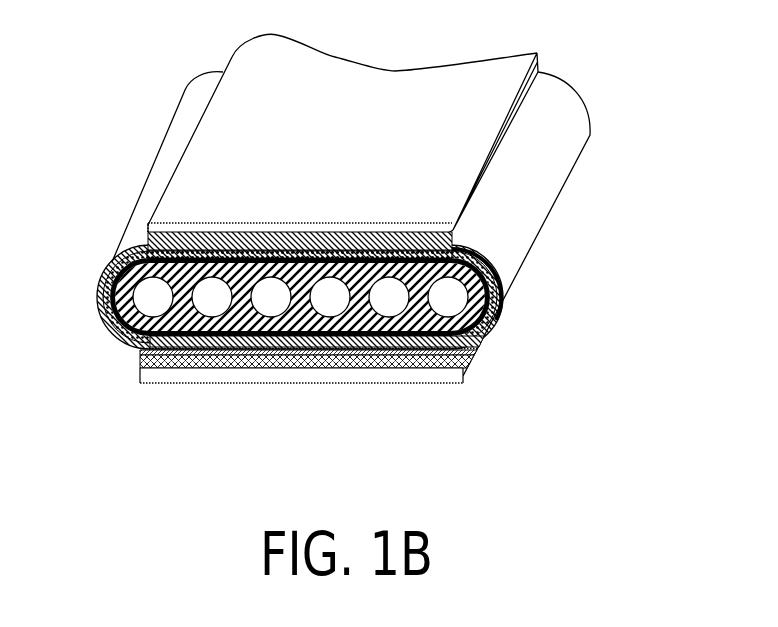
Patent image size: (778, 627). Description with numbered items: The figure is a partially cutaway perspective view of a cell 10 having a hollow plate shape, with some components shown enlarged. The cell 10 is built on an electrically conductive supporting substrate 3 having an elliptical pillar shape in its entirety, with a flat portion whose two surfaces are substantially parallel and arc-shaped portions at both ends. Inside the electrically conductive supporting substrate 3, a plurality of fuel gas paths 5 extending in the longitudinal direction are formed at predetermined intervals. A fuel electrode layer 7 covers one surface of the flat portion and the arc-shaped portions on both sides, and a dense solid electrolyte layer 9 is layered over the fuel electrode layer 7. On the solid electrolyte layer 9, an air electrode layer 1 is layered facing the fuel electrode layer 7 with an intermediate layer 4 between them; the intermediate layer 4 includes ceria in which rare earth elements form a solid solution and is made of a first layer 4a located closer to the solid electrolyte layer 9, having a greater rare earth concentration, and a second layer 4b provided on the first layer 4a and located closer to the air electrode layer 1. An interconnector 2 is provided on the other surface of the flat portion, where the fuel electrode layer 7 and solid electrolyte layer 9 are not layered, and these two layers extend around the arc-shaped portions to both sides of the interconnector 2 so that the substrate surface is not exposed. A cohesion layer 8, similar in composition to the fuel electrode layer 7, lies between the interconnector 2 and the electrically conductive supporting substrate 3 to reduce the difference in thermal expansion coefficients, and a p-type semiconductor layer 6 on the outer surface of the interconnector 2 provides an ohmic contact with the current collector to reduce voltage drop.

The air electrode layer 1 is at (205, 372).
The interconnector 2 is at (160, 243).
The electrically conductive supporting substrate 3 is at (492, 332).
The intermediate layer 4 is at (307, 422).
The first layer 4a is at (347, 357).
The second layer 4b is at (345, 427).
The fuel gas paths 5 is at (221, 302).
The p-type semiconductor layer 6 is at (437, 227).
The fuel electrode layer 7 is at (455, 350).
The cohesion layer 8 is at (455, 250).
The solid electrolyte layer 9 is at (277, 352).
The cell 10 is at (192, 70).